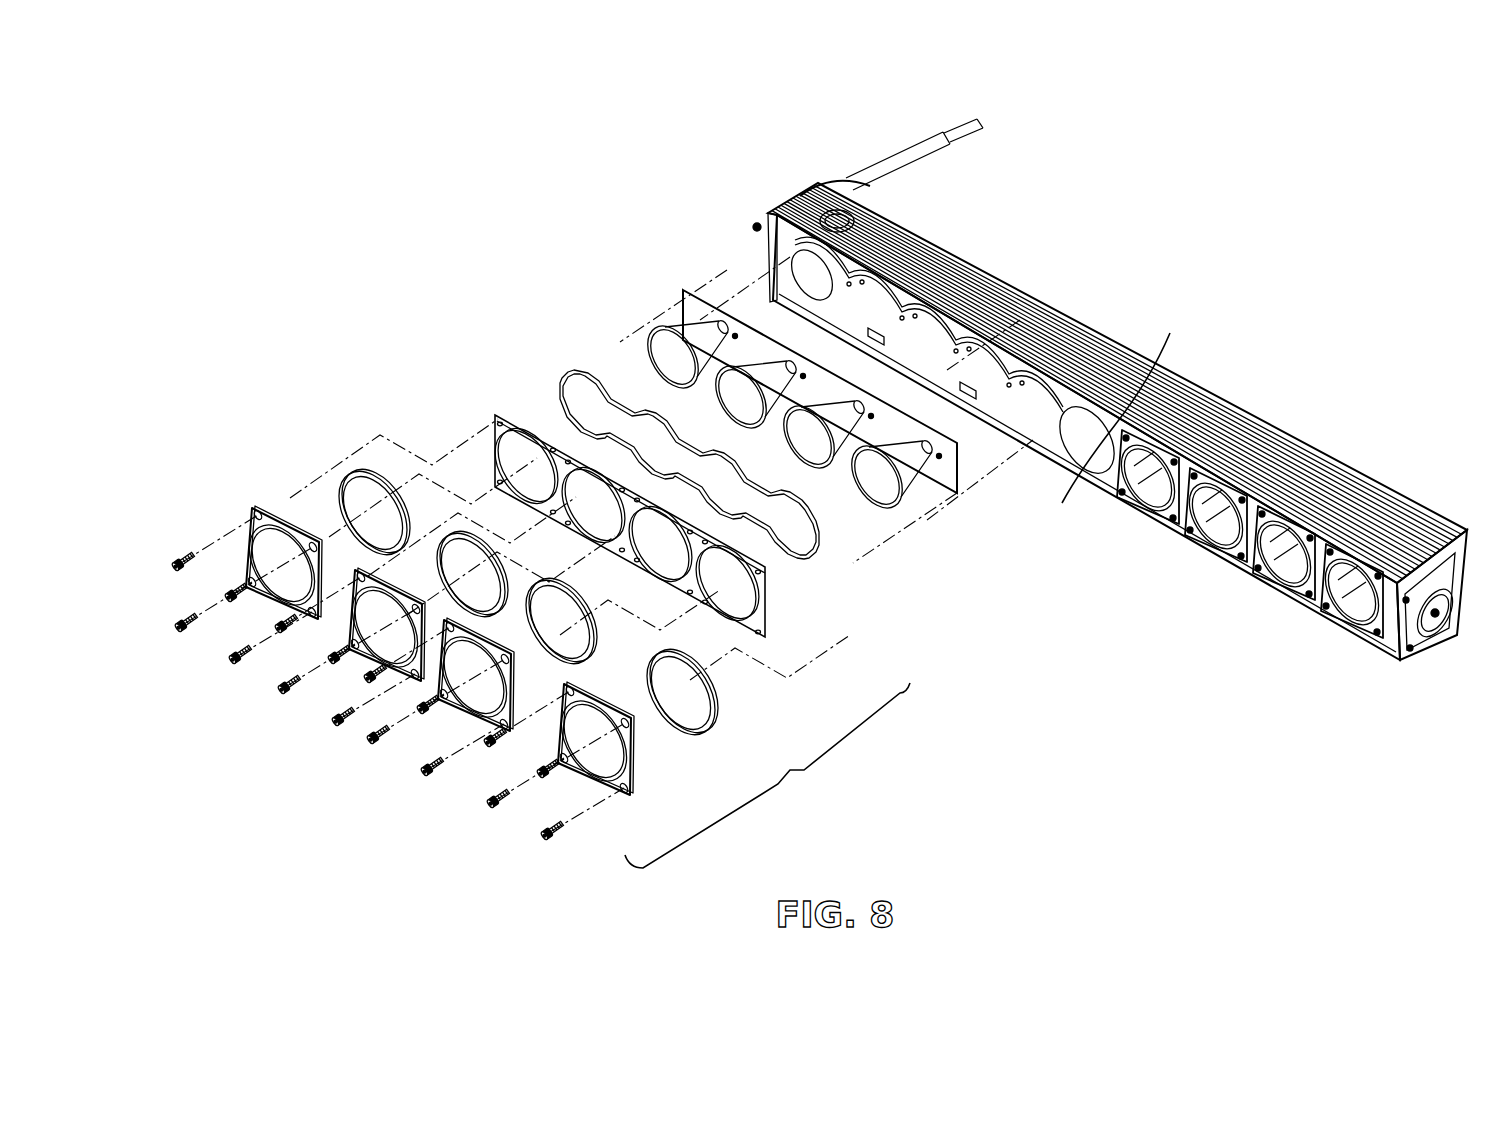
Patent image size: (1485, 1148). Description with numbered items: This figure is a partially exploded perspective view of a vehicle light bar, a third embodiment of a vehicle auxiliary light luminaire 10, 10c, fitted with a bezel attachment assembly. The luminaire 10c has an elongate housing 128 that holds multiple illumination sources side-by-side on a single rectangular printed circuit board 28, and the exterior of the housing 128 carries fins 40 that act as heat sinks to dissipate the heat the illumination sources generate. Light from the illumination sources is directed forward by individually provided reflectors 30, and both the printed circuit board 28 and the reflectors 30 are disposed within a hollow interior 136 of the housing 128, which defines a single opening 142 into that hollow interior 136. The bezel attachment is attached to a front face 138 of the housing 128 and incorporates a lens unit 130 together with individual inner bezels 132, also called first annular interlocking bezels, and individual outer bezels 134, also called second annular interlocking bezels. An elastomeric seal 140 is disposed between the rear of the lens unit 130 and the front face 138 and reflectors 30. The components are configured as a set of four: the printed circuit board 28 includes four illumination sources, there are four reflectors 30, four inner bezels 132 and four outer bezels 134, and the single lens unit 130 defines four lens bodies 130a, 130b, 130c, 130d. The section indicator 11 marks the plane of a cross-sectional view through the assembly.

The vehicle auxiliary light luminaire 10 is at (1110, 389).
The third embodiment of a vehicle auxiliary light luminaire 10c is at (1110, 389).
The section line 11 is at (890, 197).
The printed circuit board 28 is at (958, 469).
The reflectors 30 is at (908, 492).
The fins 40 is at (1440, 514).
The housing 128 is at (1228, 392).
The lens unit 130 is at (653, 542).
The lens opening 130a is at (716, 572).
The lens opening 130b is at (648, 542).
The lens opening 130c is at (588, 505).
The lens opening 130d is at (527, 477).
The inner bezels 132 is at (713, 715).
The outer bezels 134 is at (633, 785).
The hollow interior 136 is at (883, 317).
The front face 138 is at (1099, 494).
The elastomeric seal 140 is at (820, 558).
The opening 142 is at (957, 345).